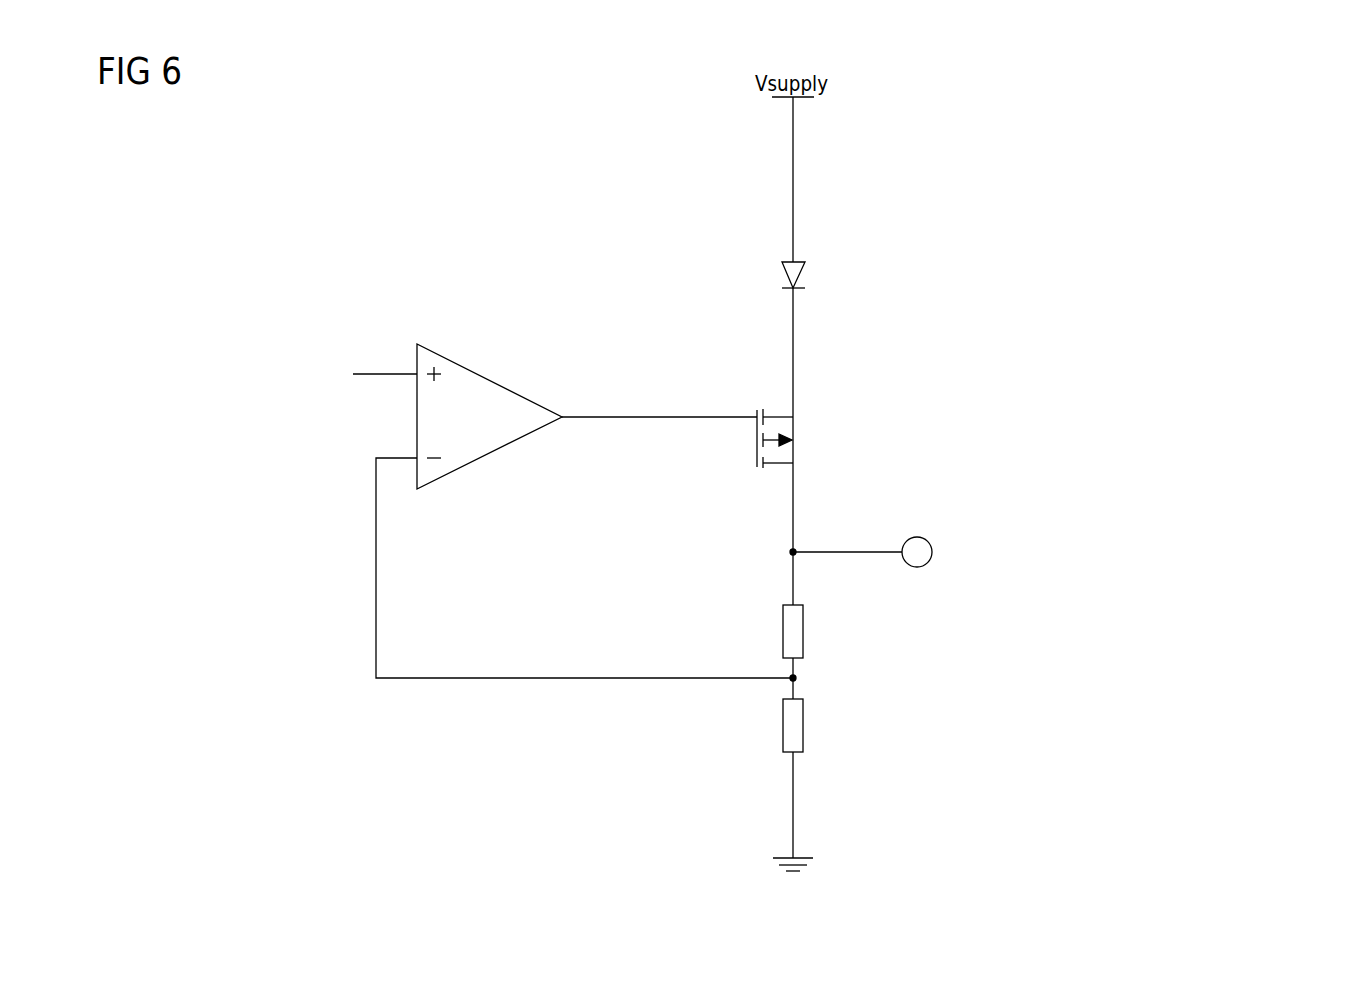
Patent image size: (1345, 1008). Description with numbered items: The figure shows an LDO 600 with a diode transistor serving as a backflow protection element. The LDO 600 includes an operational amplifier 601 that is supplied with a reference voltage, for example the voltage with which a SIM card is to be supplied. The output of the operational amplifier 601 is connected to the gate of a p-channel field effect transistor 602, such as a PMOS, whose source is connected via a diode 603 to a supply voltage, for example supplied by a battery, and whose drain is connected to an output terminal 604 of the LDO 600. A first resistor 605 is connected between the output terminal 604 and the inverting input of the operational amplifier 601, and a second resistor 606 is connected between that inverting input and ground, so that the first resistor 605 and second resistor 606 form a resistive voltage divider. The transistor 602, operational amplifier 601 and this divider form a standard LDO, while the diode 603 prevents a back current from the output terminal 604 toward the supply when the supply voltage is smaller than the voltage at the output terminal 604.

The LDO 600 is at (1235, 128).
The operational amplifier 601 is at (502, 384).
The p-channel field effect transistor 602 is at (792, 449).
The diode 603 is at (802, 263).
The output terminal 604 is at (922, 538).
The first resistor 605 is at (802, 634).
The second resistor 606 is at (803, 723).